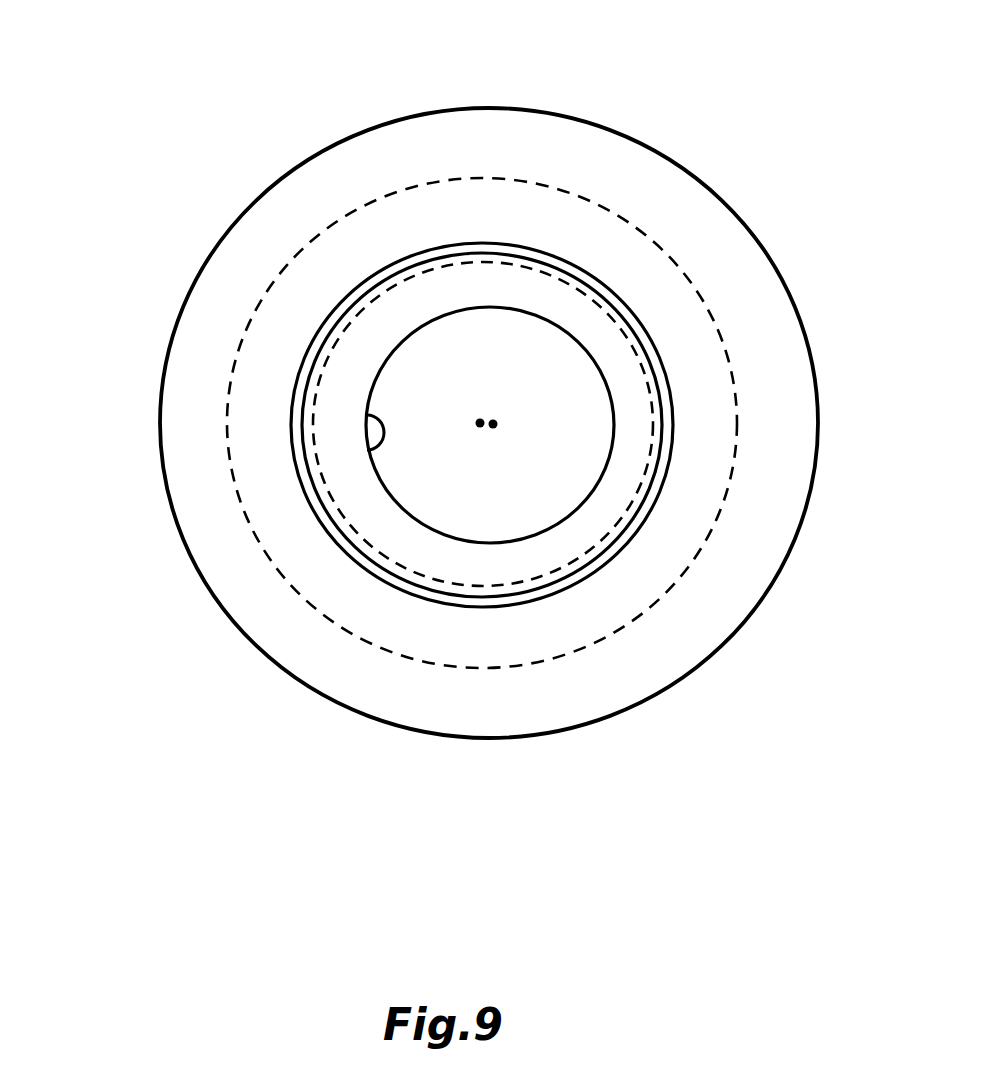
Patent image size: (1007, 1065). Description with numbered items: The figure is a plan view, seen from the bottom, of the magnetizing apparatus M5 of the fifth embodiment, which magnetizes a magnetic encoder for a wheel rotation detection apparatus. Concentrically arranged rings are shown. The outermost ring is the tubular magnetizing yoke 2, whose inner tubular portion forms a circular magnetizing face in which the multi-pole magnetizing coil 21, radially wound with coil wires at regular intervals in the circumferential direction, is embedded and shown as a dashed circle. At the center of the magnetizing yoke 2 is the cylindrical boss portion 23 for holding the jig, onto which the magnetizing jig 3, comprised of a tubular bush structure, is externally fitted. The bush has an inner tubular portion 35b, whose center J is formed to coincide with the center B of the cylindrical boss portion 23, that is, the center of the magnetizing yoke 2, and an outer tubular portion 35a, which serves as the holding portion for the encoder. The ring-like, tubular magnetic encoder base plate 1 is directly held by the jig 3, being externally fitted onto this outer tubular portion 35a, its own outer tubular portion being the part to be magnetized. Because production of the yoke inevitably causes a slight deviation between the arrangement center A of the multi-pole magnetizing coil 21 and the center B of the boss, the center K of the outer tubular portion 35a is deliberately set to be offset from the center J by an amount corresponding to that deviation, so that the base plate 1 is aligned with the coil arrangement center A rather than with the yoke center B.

The magnetizing apparatus M5 is at (784, 245).
The magnetic encoder base plate 1 is at (627, 537).
The magnetizing yoke 2 is at (790, 493).
The multi-pole magnetizing coil 21 is at (706, 531).
The cylindrical boss portion for holding jig 23 is at (583, 410).
The magnetizing jig 3 is at (358, 523).
The outer tubular portion of the tubular bush structure 35a is at (310, 365).
The inner tubular portion of the tubular bush structure 35b is at (366, 448).
The arrangement center of the multi-pole magnetizing coil A is at (480, 423).
The center of the cylindrical boss portion for holding jig B is at (493, 424).